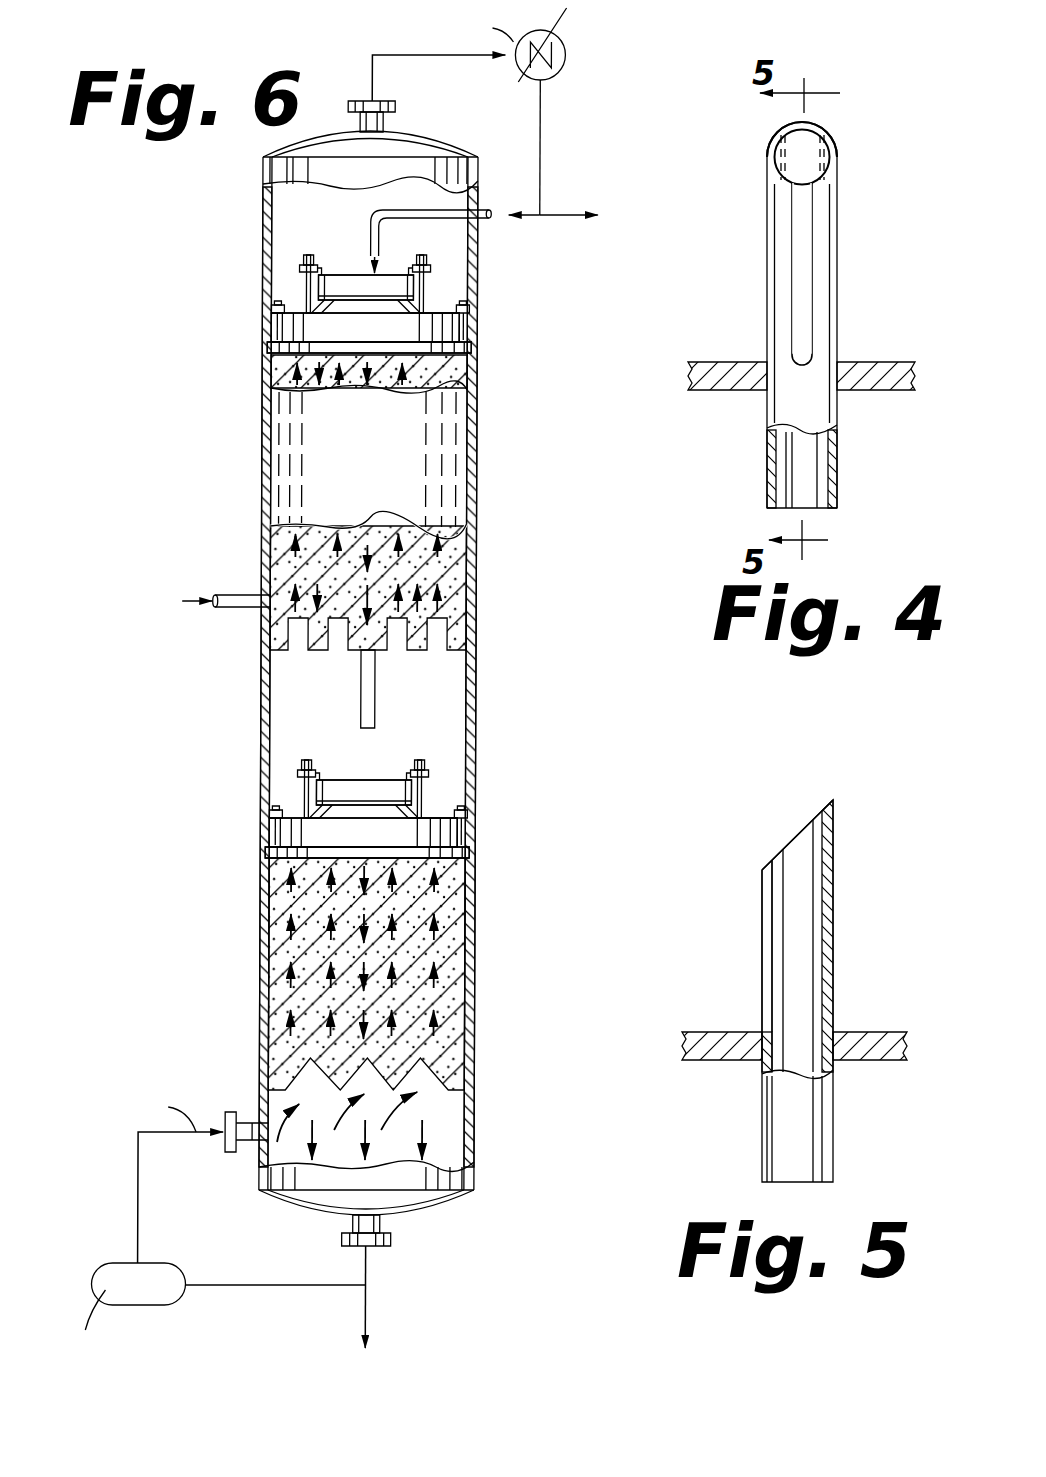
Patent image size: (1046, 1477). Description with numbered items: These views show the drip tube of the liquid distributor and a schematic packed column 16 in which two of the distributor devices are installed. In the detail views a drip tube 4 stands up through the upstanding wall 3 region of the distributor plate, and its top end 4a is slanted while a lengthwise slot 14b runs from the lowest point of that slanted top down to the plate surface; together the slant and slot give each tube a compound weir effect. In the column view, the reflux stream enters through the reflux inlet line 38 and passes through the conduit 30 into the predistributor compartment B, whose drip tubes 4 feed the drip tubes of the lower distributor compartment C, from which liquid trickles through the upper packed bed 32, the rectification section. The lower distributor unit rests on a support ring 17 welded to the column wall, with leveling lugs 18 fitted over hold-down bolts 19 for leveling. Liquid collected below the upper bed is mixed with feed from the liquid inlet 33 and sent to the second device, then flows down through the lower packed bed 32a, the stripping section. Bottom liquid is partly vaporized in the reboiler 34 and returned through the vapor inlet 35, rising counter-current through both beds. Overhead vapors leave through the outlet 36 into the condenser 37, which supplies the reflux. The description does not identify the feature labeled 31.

In FIG. 4, the upstanding wall 3 is at (713, 362).
In FIG. 5, the upstanding wall 3 is at (865, 1032).
In FIG. 4, the drip tube 4 is at (828, 254).
In FIG. 5, the drip tube 4 is at (831, 924).
In FIG. 4, the top end of drip tube 4a is at (823, 138).
In FIG. 5, the top end of drip tube 4a is at (790, 838).
In FIG. 4, the lengthwise slot 14b is at (800, 306).
In FIG. 5, the lengthwise slot 14b is at (768, 960).
In FIG. 6, the column 16 is at (263, 250).
In FIG. 6, the support ring 17 is at (276, 350).
In FIG. 6, the leveling lug 18 is at (468, 316).
In FIG. 6, the hold-down bolt 19 is at (470, 333).
In FIG. 6, the conduit 30 is at (371, 248).
In FIG. 6, the pipe outlet 31 is at (379, 262).
In FIG. 6, the upper packed bed 32 is at (455, 372).
In FIG. 6, the lower packed bed 32a is at (455, 961).
In FIG. 6, the liquid feed inlet 33 is at (242, 608).
In FIG. 6, the reboiler 34 is at (170, 1270).
In FIG. 6, the vapor inlet 35 is at (247, 1135).
In FIG. 6, the overhead vapor outlet 36 is at (387, 122).
In FIG. 6, the condenser 37 is at (565, 55).
In FIG. 6, the reflux inlet line 38 is at (489, 210).
In FIG. 6, the predistributor compartment B is at (358, 283).
In FIG. 6, the lower distributor compartment C is at (425, 330).